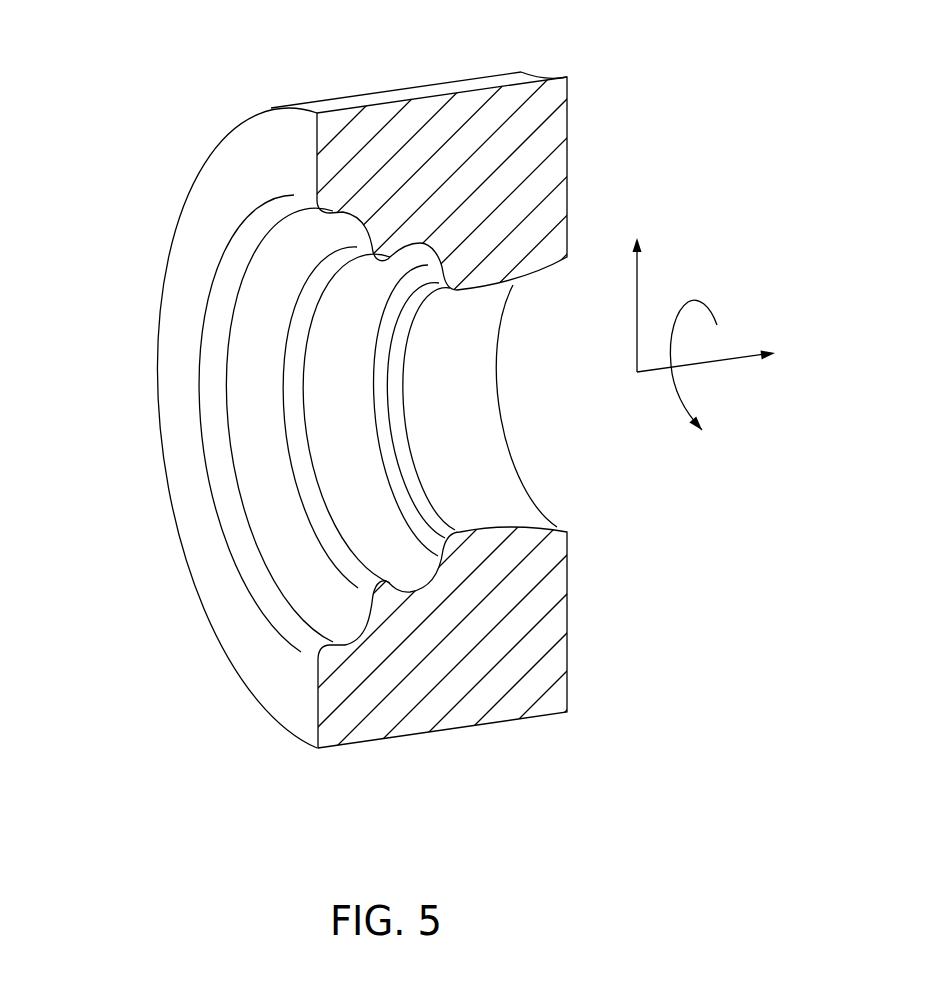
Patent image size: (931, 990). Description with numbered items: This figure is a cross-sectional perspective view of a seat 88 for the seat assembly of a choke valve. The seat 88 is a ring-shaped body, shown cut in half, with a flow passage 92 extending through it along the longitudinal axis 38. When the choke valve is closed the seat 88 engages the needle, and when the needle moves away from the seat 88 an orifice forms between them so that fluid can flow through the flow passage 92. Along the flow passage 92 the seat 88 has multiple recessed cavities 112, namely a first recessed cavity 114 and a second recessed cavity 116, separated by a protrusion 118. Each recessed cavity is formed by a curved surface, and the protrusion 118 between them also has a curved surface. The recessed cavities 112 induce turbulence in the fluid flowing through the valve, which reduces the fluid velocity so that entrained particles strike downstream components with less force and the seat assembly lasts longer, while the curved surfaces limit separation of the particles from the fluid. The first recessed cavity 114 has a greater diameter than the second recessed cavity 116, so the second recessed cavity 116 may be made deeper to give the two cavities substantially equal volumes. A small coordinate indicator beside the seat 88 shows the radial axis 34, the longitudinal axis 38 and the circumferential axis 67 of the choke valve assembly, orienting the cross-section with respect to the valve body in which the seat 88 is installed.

The seat 88 is at (397, 715).
The flow passage 92 is at (527, 485).
The recessed cavities 112 is at (253, 395).
The first recessed cavity 114 is at (277, 520).
The second recessed cavity 116 is at (348, 333).
The protrusion 118 is at (312, 280).
The radial axis 34 is at (638, 282).
The longitudinal axis 38 is at (732, 355).
The circumferential axis 67 is at (670, 385).